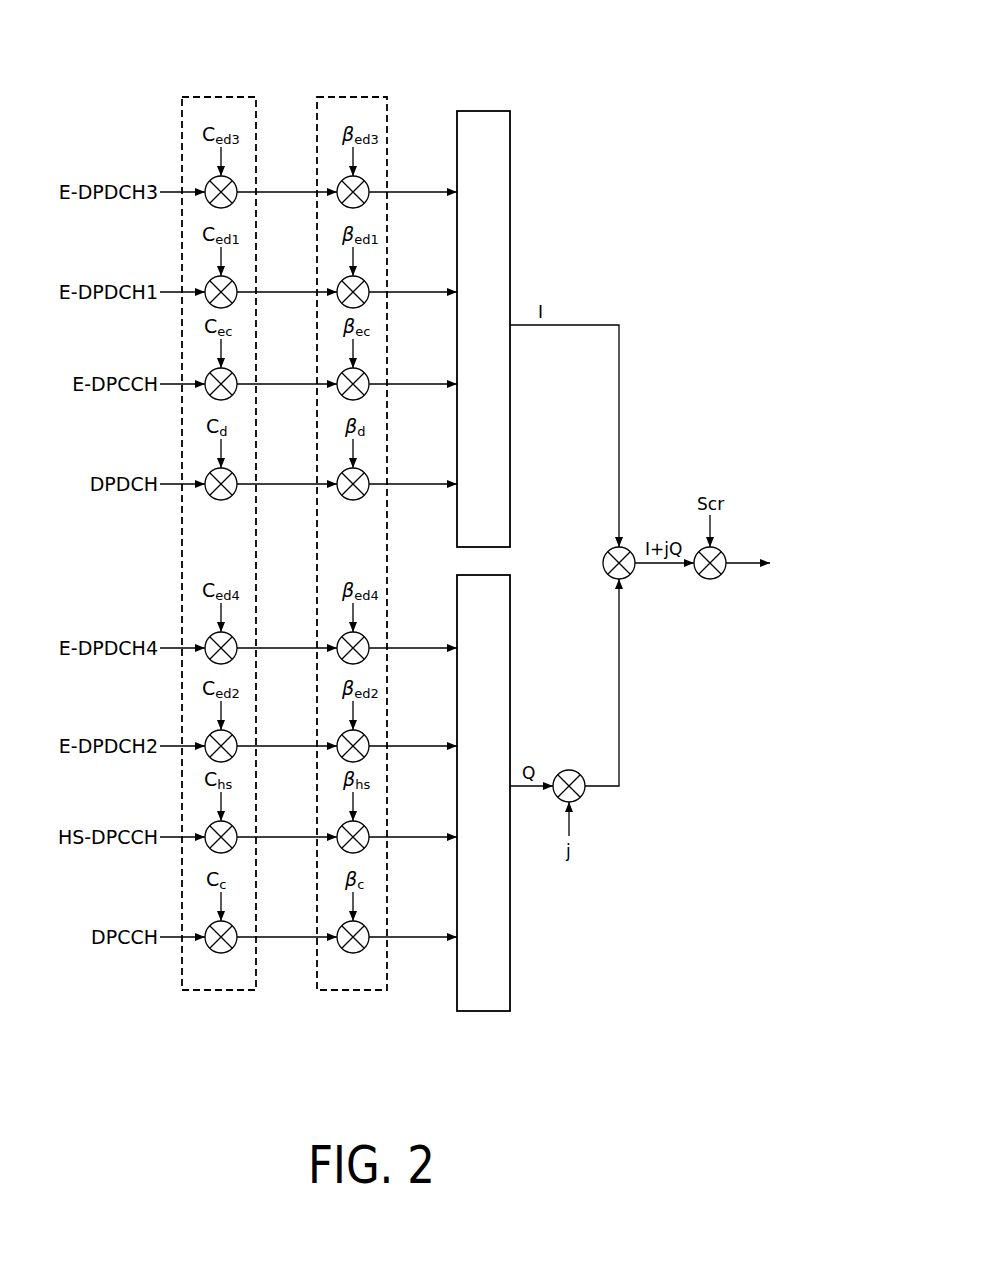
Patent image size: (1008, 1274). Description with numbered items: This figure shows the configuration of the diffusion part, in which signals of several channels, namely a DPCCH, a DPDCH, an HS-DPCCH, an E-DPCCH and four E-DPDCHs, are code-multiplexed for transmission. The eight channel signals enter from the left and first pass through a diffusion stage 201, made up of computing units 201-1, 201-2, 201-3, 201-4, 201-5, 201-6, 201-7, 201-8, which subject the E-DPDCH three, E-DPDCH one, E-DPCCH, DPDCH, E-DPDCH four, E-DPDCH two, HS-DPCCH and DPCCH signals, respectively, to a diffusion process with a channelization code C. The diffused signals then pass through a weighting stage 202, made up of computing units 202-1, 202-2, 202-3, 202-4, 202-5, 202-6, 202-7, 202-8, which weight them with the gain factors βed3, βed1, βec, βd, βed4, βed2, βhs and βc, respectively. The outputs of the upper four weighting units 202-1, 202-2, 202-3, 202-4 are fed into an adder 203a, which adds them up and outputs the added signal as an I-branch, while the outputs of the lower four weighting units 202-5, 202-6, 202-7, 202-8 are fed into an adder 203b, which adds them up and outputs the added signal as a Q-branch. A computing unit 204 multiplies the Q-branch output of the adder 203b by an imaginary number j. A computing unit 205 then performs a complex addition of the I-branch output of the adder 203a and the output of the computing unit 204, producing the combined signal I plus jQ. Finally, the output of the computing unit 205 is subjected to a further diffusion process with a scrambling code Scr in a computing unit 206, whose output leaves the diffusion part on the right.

The computing units 201-1 to 201-8 (diffusion stage) 201 is at (223, 97).
The computing unit 201-1 is at (232, 181).
The computing unit 201-2 is at (232, 281).
The computing unit 201-3 is at (232, 373).
The computing unit 201-4 is at (232, 473).
The computing unit 201-5 is at (232, 637).
The computing unit 201-6 is at (232, 735).
The computing unit 201-7 is at (232, 826).
The computing unit 201-8 is at (232, 926).
The computing units 202-1 to 202-8 (gain factor weighting stage) 202 is at (343, 97).
The computing unit 202-1 is at (364, 181).
The computing unit 202-2 is at (364, 281).
The computing unit 202-3 is at (364, 373).
The computing unit 202-4 is at (364, 473).
The computing unit 202-5 is at (364, 637).
The computing unit 202-6 is at (364, 735).
The computing unit 202-7 is at (364, 826).
The computing unit 202-8 is at (364, 926).
The adder 203a is at (482, 111).
The adder 203b is at (483, 1011).
The computing unit 204 is at (562, 772).
The computing unit 205 is at (604, 557).
The computing unit 206 is at (702, 578).